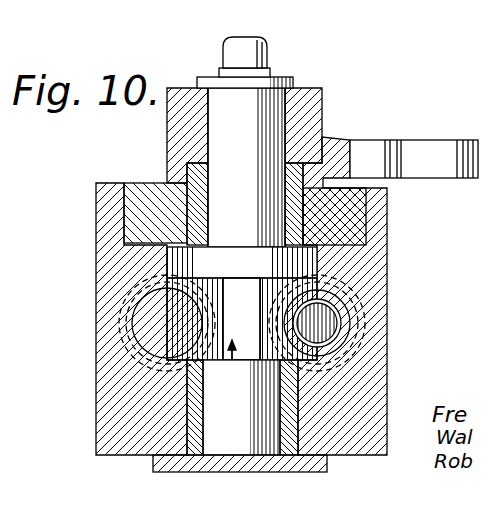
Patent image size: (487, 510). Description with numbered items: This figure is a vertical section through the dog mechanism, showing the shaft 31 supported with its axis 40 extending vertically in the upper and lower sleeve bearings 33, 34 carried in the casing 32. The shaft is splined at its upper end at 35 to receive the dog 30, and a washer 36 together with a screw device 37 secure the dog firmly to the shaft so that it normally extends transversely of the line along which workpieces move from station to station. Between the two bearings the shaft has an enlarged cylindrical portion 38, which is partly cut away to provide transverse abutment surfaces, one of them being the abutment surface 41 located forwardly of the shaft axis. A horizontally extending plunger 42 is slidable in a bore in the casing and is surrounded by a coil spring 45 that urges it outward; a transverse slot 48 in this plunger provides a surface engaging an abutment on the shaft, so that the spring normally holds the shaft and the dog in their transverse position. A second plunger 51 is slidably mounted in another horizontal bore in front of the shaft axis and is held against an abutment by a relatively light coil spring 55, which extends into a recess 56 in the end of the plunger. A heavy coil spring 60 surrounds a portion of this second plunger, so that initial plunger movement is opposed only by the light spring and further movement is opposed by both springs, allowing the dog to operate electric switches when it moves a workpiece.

The dog 30 is at (372, 140).
The shaft 31 is at (225, 442).
The casing 32 is at (355, 267).
The sleeve bearing 33 is at (187, 180).
The sleeve bearing 34 is at (296, 457).
The splined upper end 35 is at (245, 164).
The washer 36 is at (207, 77).
The screw device 37 is at (253, 37).
The enlarged cylindrical portion 38 is at (229, 247).
The shaft axis 40 is at (230, 373).
The transverse abutment surface 41 is at (252, 316).
The plunger 42 is at (167, 310).
The coil spring 45 is at (108, 352).
The transverse slot 48 is at (120, 290).
The second plunger 51 is at (335, 337).
The light coil spring 55 is at (330, 300).
The recess 56 is at (340, 317).
The heavy coil spring 60 is at (360, 367).